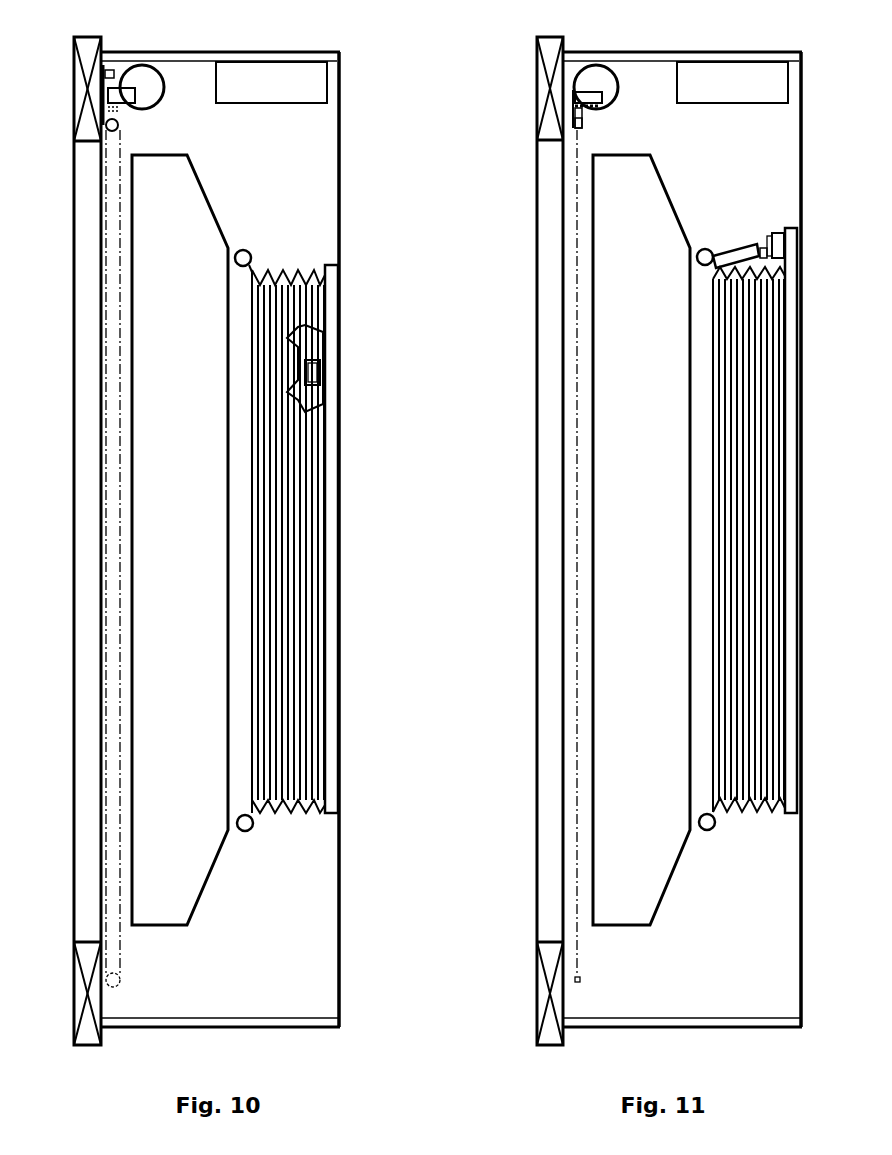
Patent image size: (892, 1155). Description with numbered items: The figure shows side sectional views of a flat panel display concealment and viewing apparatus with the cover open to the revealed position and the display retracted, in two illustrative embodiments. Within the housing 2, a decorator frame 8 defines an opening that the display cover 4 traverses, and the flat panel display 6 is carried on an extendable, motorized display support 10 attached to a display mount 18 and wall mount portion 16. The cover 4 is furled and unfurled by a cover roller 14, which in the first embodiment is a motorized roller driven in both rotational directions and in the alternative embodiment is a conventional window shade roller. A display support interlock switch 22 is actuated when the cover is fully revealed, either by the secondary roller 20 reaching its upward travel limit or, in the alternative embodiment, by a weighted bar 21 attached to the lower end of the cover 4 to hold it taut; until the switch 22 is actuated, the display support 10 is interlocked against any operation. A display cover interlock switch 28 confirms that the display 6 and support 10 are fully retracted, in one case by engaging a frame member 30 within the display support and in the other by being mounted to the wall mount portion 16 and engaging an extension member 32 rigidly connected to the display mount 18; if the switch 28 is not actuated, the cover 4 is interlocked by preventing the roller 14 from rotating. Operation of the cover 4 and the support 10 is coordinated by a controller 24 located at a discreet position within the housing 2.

In FIG. 10, the housing 2 is at (249, 52).
In FIG. 11, the housing 2 is at (712, 52).
In FIG. 10, the display cover 4 is at (120, 112).
In FIG. 11, the display cover 4 is at (568, 396).
In FIG. 10, the flat panel display 6 is at (204, 196).
In FIG. 11, the flat panel display 6 is at (665, 196).
In FIG. 10, the frame 8 is at (73, 100).
In FIG. 11, the frame 8 is at (537, 100).
In FIG. 10, the display support 10 is at (299, 813).
In FIG. 11, the display support 10 is at (759, 813).
In FIG. 10, the cover roller 14 is at (163, 94).
In FIG. 11, the cover roller 14 is at (617, 94).
In FIG. 10, the wall mount portion 16 is at (332, 262).
In FIG. 11, the wall mount portion 16 is at (793, 815).
In FIG. 10, the display mount 18 is at (242, 250).
In FIG. 11, the display mount 18 is at (705, 830).
In FIG. 10, the secondary roller 20 is at (112, 145).
In FIG. 11, the weighted bar 21 is at (585, 122).
In FIG. 10, the display support interlock switch 22 is at (112, 88).
In FIG. 11, the display support interlock switch 22 is at (587, 92).
In FIG. 10, the controller 24 is at (258, 103).
In FIG. 11, the controller 24 is at (720, 103).
In FIG. 10, the display cover interlock switch 28 is at (311, 385).
In FIG. 11, the display cover interlock switch 28 is at (776, 233).
In FIG. 10, the frame member 30 is at (297, 344).
In FIG. 11, the extension member 32 is at (735, 250).